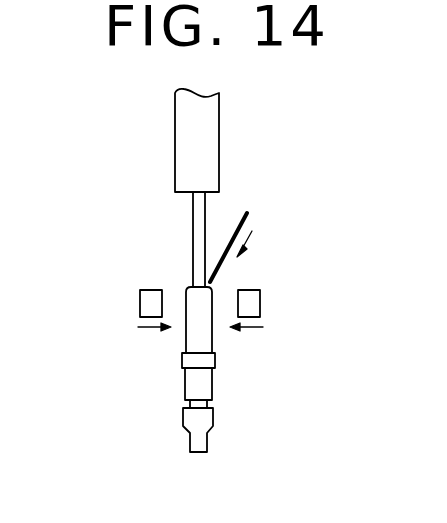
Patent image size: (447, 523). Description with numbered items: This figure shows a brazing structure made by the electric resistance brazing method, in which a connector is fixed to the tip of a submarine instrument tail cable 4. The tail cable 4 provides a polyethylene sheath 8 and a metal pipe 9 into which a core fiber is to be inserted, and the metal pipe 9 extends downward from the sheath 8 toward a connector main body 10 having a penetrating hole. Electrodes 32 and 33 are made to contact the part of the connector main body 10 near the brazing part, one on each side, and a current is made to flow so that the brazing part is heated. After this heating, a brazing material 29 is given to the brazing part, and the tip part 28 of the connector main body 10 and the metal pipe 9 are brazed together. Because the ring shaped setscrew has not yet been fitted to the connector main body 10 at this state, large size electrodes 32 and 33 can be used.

The submarine instrument tail cable 4 is at (220, 120).
The polyethylene sheath 8 is at (188, 119).
The metal pipe 9 is at (193, 225).
The connector main body 10 is at (208, 380).
The tip part 28 is at (188, 300).
The brazing material 29 is at (249, 214).
The electrode 32 is at (140, 307).
The electrode 33 is at (260, 305).